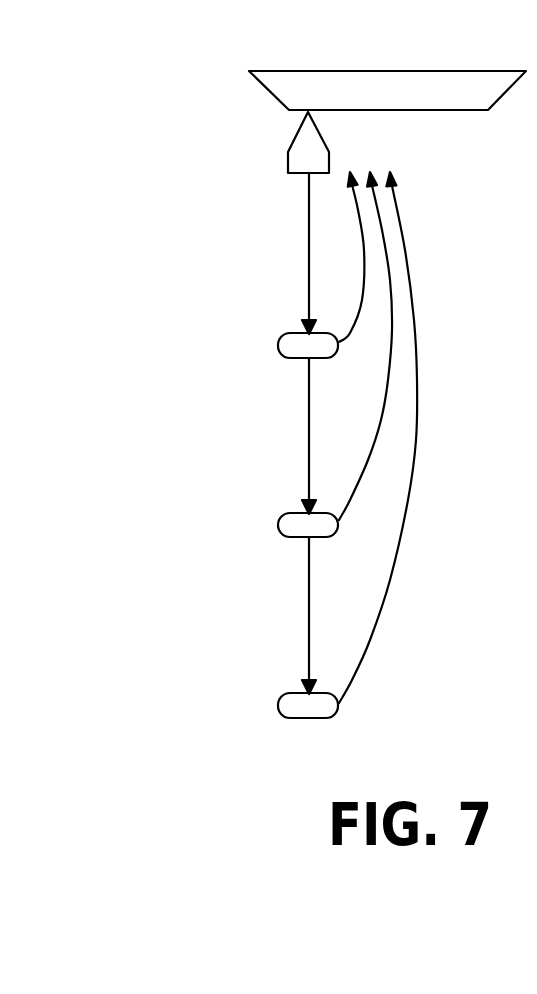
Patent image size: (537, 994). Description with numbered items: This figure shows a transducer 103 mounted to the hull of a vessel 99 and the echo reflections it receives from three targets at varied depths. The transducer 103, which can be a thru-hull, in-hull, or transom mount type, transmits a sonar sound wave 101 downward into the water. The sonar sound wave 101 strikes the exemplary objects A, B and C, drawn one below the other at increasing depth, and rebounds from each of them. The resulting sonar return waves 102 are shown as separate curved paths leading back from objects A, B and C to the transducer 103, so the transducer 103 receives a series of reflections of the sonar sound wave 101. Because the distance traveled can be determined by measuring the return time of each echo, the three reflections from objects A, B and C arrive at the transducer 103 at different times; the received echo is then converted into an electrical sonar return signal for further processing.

The vessel 99 is at (368, 90).
The transducer 103 is at (303, 147).
The sonar sound wave 101 is at (297, 225).
The sonar return waves 102 is at (418, 268).
The exemplary object A is at (275, 338).
The exemplary object B is at (275, 518).
The exemplary object C is at (275, 698).